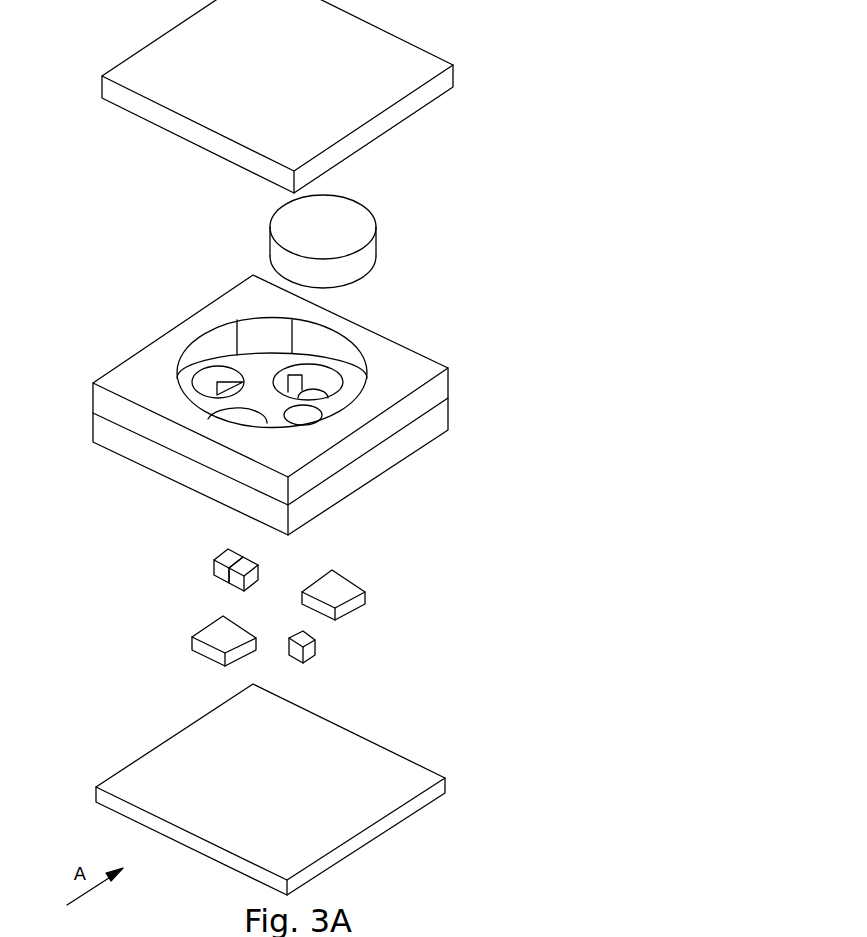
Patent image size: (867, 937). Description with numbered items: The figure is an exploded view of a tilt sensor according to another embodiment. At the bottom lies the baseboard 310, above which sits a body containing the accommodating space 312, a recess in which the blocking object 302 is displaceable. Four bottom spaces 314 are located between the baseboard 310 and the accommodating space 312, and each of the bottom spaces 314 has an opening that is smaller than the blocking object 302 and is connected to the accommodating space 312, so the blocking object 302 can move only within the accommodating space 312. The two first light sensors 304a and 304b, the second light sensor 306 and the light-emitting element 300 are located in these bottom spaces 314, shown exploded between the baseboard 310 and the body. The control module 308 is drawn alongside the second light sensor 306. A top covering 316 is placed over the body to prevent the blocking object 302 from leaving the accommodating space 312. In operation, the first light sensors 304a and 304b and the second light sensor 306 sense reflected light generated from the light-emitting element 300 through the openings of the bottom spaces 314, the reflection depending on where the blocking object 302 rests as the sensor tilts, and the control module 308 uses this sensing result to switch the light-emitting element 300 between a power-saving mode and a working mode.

The top covering 316 is at (455, 72).
The blocking object 302 is at (377, 245).
The accommodating space 312 is at (325, 332).
The bottom spaces 314 is at (203, 386).
The control module 308 is at (215, 563).
The second light sensor 306 is at (242, 585).
The first light sensor 304b is at (366, 592).
The first light sensor 304a is at (192, 640).
The light-emitting element 300 is at (316, 645).
The baseboard 310 is at (448, 778).